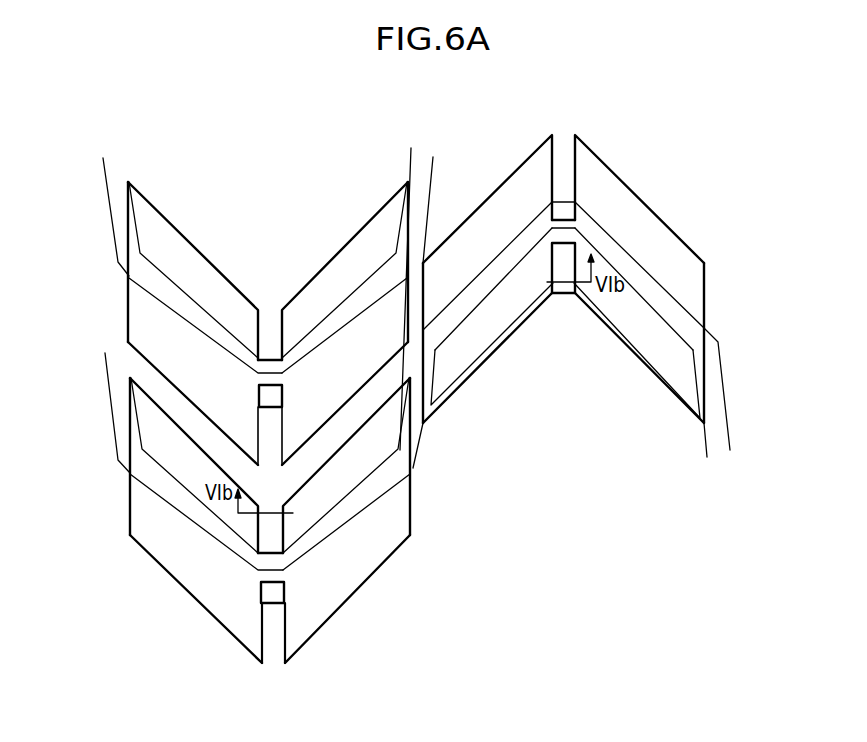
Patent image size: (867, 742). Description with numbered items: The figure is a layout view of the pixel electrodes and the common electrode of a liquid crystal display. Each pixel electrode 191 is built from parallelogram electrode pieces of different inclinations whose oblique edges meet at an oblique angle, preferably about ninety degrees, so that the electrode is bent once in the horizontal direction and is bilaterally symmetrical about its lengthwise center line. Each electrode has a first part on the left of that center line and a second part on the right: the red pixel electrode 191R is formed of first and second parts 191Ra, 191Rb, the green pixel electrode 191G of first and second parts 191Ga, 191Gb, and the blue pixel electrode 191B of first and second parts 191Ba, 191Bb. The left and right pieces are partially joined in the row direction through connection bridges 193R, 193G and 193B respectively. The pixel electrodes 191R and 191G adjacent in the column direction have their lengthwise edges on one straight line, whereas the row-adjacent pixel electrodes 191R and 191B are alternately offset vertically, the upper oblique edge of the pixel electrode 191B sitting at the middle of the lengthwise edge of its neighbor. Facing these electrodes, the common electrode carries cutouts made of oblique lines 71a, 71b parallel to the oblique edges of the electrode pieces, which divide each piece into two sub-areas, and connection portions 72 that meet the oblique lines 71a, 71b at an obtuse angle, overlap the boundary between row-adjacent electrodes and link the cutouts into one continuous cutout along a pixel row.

The connection portion 72 is at (110, 213).
The oblique line 71a is at (165, 310).
The oblique line 71b is at (338, 342).
The pixel electrode 191 is at (403, 398).
The pixel electrode 191R is at (389, 374).
The pixel electrode 191G is at (376, 529).
The pixel electrode 191B is at (563, 398).
The first part 191Ra is at (192, 244).
The second part 191Rb is at (346, 243).
The first part 191Ga is at (188, 592).
The second part 191Gb is at (317, 633).
The first part 191Ba is at (488, 199).
The second part 191Bb is at (633, 190).
The connection bridge 193R is at (270, 352).
The connection bridge 193G is at (277, 553).
The connection bridge 193B is at (565, 218).